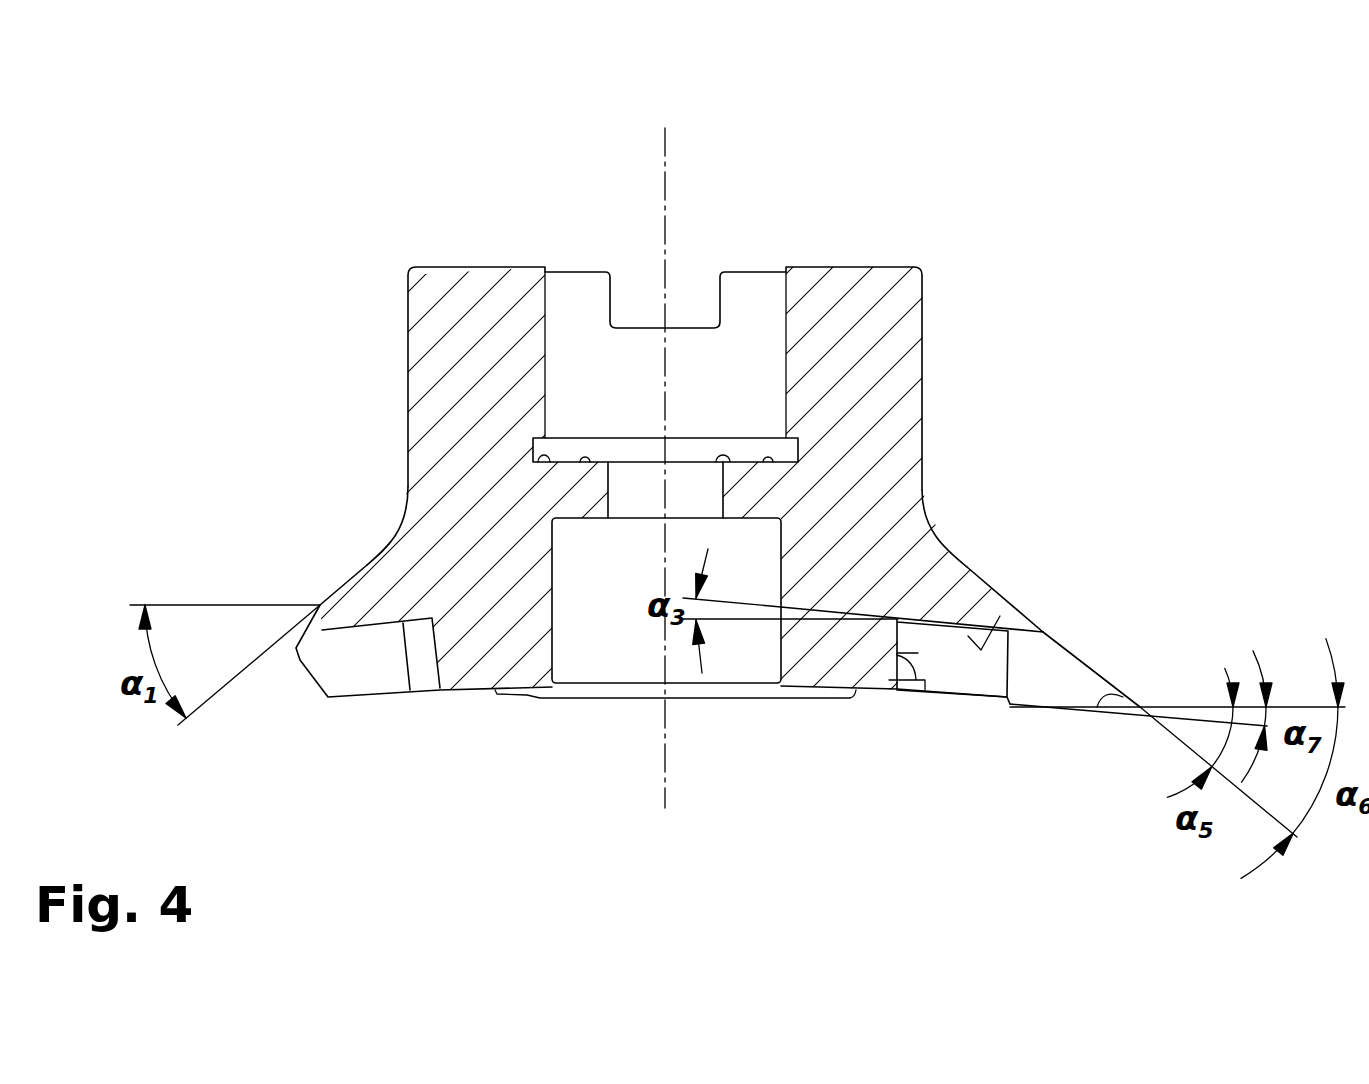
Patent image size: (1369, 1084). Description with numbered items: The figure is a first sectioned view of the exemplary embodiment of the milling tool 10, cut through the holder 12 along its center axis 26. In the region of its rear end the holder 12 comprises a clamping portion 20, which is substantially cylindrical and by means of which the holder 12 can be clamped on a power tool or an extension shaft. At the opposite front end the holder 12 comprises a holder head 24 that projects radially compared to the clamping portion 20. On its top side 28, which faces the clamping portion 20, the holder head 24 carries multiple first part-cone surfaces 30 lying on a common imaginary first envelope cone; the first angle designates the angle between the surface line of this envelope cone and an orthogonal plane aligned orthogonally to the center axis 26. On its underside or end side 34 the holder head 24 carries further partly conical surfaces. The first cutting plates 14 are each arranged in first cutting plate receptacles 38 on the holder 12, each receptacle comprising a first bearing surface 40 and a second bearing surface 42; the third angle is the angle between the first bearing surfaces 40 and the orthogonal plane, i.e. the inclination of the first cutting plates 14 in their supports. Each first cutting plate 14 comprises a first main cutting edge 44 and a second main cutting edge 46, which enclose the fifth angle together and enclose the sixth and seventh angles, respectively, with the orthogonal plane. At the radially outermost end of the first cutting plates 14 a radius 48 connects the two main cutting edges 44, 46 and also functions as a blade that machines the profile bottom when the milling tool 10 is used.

The milling tool 10 is at (968, 156).
The holder 12 is at (384, 343).
The first cutting plates 14 is at (1036, 702).
The clamping portion 20 is at (903, 330).
The holder head 24 is at (960, 648).
The center axis 26 is at (665, 200).
The top side 28 is at (357, 575).
The first part-cone surfaces 30 is at (962, 570).
The end side 34 is at (705, 745).
The first cutting plate receptacles 38 is at (1043, 632).
The first bearing surface 40 is at (981, 650).
The second bearing surface 42 is at (912, 690).
The first main cutting edge 44 is at (1072, 655).
The second main cutting edge 46 is at (1070, 708).
The radius 48 is at (1105, 708).